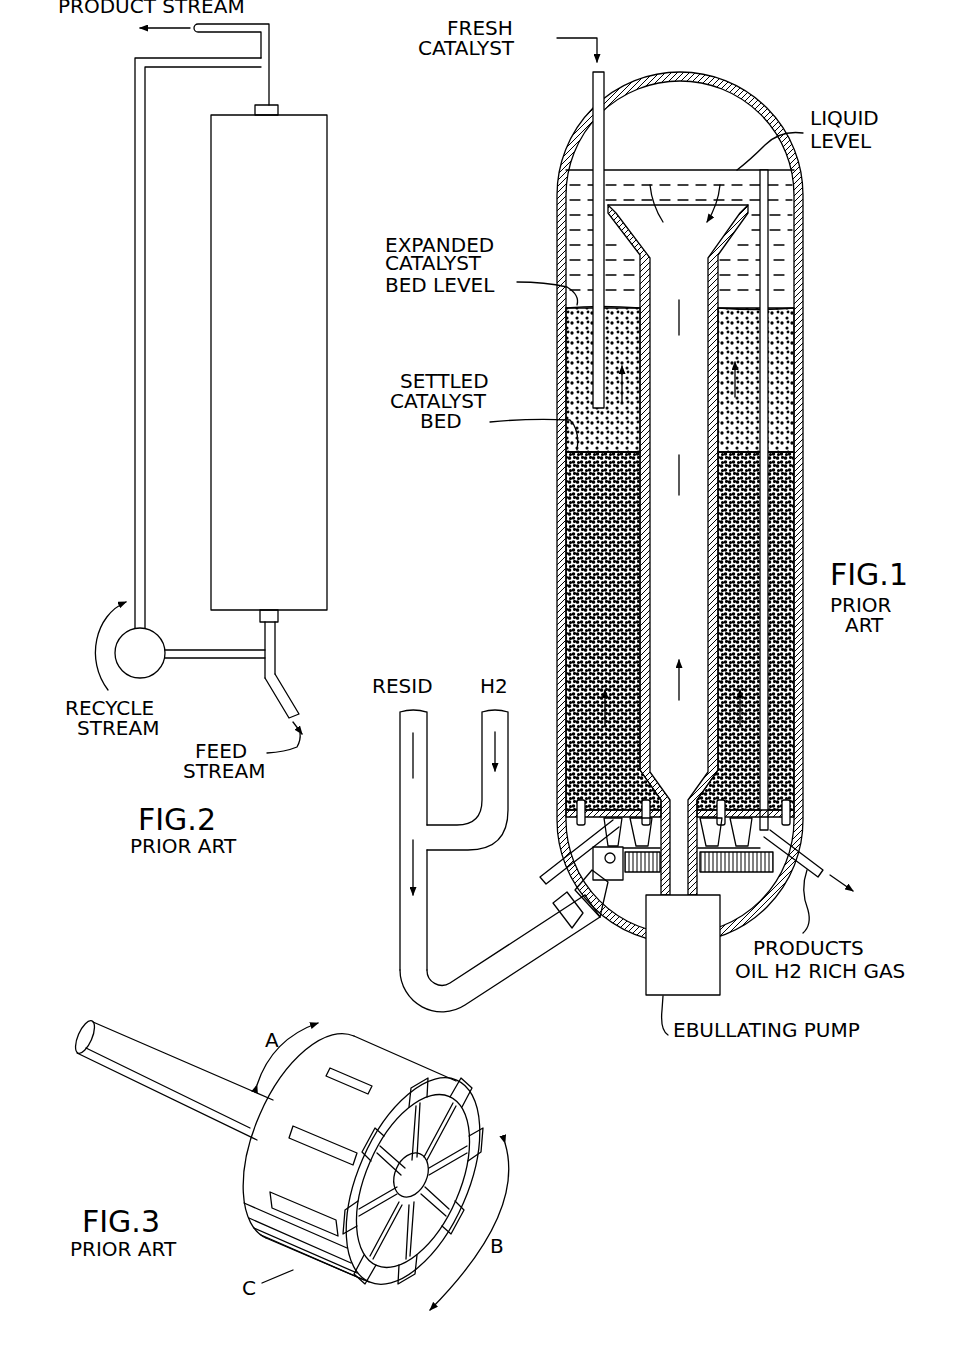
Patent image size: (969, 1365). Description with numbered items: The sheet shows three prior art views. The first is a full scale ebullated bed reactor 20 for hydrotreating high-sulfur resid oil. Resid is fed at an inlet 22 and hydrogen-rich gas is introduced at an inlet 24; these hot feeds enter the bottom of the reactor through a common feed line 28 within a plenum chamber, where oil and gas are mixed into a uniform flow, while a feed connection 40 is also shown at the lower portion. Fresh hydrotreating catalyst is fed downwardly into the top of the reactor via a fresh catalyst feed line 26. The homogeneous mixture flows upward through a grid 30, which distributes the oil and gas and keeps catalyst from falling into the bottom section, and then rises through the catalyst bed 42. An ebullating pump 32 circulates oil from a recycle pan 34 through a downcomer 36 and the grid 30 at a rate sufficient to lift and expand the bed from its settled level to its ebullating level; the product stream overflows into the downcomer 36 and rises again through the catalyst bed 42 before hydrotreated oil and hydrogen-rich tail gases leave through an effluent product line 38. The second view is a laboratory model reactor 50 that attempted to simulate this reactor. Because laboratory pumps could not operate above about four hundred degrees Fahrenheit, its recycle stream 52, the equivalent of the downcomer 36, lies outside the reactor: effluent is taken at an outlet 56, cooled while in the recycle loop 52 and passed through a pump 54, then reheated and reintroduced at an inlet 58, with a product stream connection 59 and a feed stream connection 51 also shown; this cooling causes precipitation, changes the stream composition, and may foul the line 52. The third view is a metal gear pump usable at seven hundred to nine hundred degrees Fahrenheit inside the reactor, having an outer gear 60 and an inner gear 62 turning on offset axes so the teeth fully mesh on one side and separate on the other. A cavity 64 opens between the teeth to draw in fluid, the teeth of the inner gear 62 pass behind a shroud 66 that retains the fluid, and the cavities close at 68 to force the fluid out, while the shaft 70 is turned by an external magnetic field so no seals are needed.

In FIG. 1, the ebullated bed reactor 20 is at (733, 85).
In FIG. 1, the fresh catalyst feed line 26 is at (593, 87).
In FIG. 1, the recycle pan 34 is at (748, 210).
In FIG. 1, the downcomer 36 is at (640, 600).
In FIG. 1, the catalyst bed 42 is at (580, 528).
In FIG. 1, the grid 30 is at (800, 760).
In FIG. 1, the effluent product line 38 is at (820, 852).
In FIG. 1, the feed inlet pipe 40 is at (548, 862).
In FIG. 1, the inlet 22 is at (400, 748).
In FIG. 1, the inlet 24 is at (482, 750).
In FIG. 1, the common feed line 28 is at (462, 982).
In FIG. 1, the ebullating pump 32 is at (640, 985).
In FIG. 2, the laboratory model reactor 50 is at (328, 556).
In FIG. 2, the recycle stream 52 is at (148, 290).
In FIG. 2, the pump 54 is at (157, 628).
In FIG. 2, the outlet 56 is at (278, 108).
In FIG. 2, the inlet 58 is at (280, 627).
In FIG. 2, the product stream line 59 is at (270, 33).
In FIG. 2, the feed stream line 51 is at (283, 690).
In FIG. 3, the shaft 70 is at (160, 1052).
In FIG. 3, the outer gear 60 is at (430, 1080).
In FIG. 3, the inner gear 62 is at (450, 1117).
In FIG. 3, the cavity 64 is at (360, 1193).
In FIG. 3, the shroud 66 is at (397, 1267).
In FIG. 3, the closing cavities 68 is at (477, 1120).